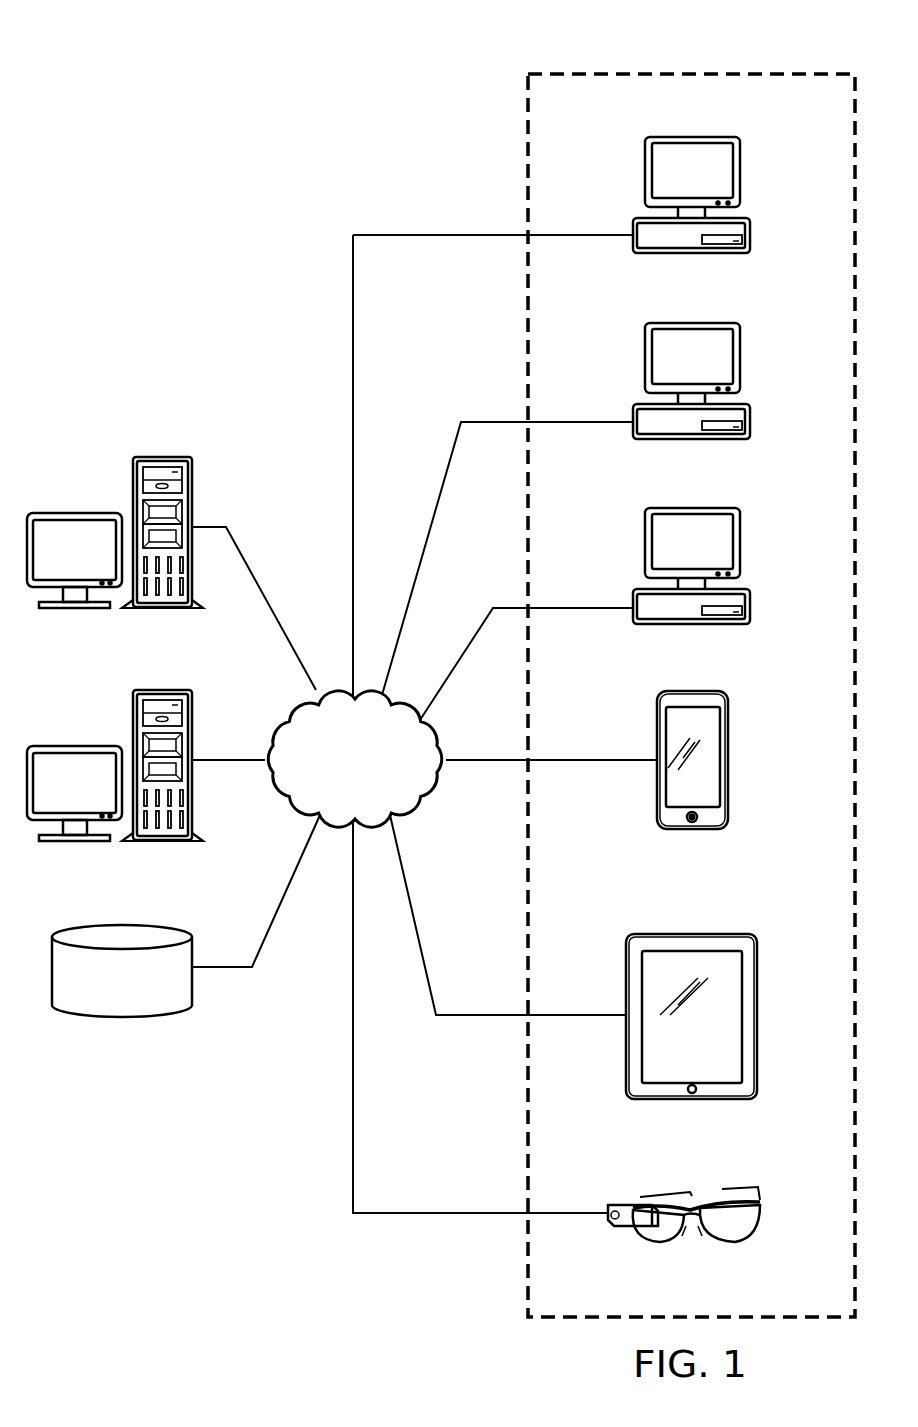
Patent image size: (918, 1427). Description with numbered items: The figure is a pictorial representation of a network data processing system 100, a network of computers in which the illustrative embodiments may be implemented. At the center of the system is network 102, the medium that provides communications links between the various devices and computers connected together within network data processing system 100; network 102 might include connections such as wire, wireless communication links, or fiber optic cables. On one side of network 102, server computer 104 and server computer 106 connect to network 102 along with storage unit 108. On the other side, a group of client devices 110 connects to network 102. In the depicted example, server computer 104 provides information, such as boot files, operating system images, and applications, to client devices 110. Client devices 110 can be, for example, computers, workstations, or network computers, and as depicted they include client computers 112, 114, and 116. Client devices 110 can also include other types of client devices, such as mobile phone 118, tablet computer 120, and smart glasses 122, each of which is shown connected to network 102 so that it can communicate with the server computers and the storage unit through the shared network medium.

The network data processing system 100 is at (203, 168).
The network 102 is at (332, 793).
The server computer 104 is at (73, 513).
The server computer 106 is at (73, 746).
The storage unit 108 is at (118, 1018).
The client devices 110 is at (766, 64).
The client computer 112 is at (741, 170).
The client computer 114 is at (741, 356).
The client computer 116 is at (741, 541).
The mobile phone 118 is at (729, 777).
The tablet computer 120 is at (758, 1030).
The smart glasses 122 is at (760, 1215).